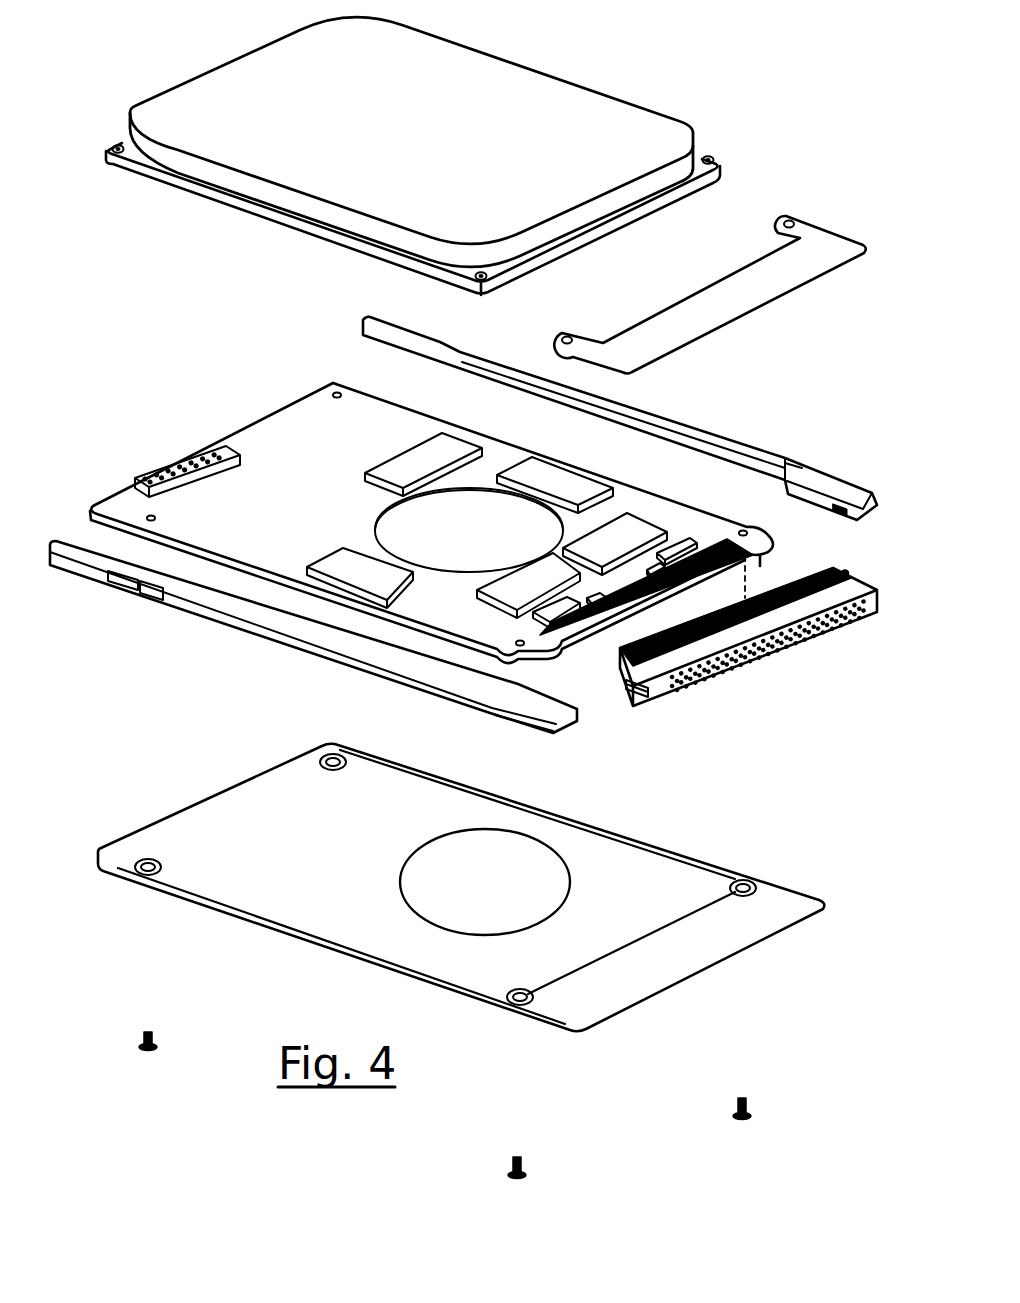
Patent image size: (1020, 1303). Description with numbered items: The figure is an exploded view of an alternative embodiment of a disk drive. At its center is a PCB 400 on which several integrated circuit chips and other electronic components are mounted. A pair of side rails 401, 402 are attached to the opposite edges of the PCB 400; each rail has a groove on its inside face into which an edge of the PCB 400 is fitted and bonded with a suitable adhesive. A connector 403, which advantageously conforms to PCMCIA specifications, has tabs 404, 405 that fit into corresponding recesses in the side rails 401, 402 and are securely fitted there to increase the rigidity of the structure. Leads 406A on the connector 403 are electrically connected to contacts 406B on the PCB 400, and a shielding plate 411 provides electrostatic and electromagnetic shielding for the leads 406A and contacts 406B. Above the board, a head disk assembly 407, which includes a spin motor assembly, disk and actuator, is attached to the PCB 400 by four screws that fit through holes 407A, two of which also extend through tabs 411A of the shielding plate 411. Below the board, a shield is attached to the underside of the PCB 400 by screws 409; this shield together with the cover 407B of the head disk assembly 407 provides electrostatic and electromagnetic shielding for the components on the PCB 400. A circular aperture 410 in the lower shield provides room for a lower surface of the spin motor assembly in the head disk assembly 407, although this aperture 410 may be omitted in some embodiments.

The PCB 400 is at (431, 533).
The side rail 401 is at (270, 646).
The side rail 402 is at (777, 452).
The connector 403 is at (755, 642).
The tab 404 is at (630, 696).
The tab 405 is at (845, 572).
The leads 406A is at (784, 576).
The contacts 406B is at (626, 630).
The head disk assembly 407 is at (411, 142).
The holes 407A is at (711, 156).
The cover 407B is at (292, 134).
The screws 409 is at (182, 1020).
The circular aperture 410 is at (458, 893).
The shielding plate 411 is at (743, 274).
The tabs 411A is at (791, 218).